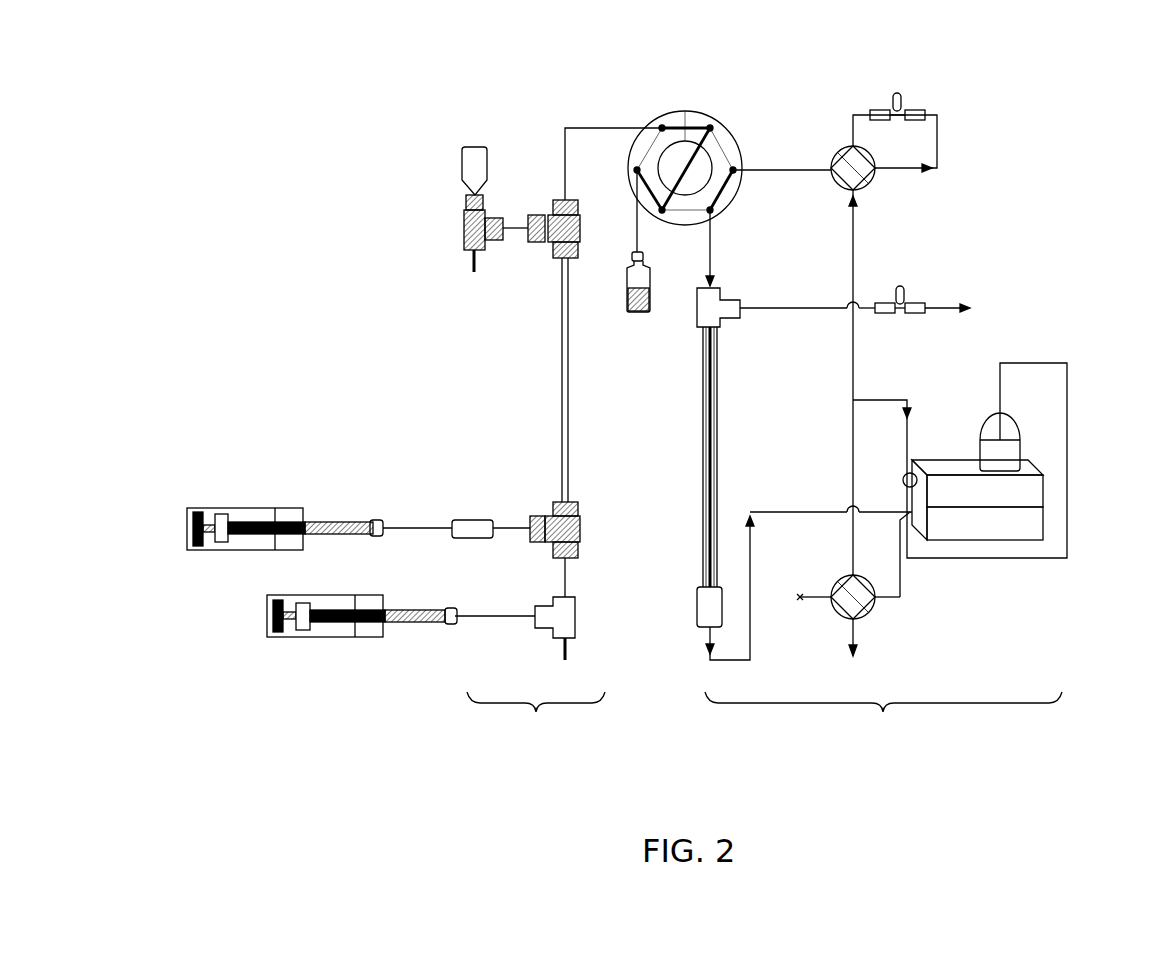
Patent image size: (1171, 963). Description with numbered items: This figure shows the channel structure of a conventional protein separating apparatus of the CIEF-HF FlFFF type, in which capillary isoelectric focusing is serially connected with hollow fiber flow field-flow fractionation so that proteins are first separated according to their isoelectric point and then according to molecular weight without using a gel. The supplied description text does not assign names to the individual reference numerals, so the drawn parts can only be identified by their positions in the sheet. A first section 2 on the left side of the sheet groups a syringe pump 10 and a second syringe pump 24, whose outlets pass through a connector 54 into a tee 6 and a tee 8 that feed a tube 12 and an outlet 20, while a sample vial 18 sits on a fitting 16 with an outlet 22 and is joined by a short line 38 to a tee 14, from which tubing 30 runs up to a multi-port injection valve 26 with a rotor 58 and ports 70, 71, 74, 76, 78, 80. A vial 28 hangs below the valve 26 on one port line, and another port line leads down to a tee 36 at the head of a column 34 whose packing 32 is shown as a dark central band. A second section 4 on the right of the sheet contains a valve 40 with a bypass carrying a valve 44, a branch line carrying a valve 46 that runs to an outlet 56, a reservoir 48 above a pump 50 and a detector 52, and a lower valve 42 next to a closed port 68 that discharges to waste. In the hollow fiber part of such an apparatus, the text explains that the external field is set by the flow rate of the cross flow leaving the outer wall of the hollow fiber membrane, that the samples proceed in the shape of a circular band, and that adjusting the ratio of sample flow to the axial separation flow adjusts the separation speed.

The sample preparation section 2 is at (536, 721).
The analysis section 4 is at (883, 721).
The tee fitting 6 is at (582, 530).
The tee fitting 8 is at (577, 620).
The syringe pump 10 is at (243, 508).
The tube 12 is at (570, 400).
The tee fitting 14 is at (584, 250).
The fitting 16 is at (464, 228).
The sample vial 18 is at (462, 154).
The outlet 20 is at (570, 648).
The outlet 22 is at (470, 258).
The syringe pump 24 is at (323, 637).
The injection valve 26 is at (740, 140).
The vial 28 is at (640, 315).
The tubing 30 is at (600, 124).
The column packing 32 is at (721, 416).
The column 34 is at (721, 347).
The tee fitting 36 is at (721, 290).
The tubing 38 is at (513, 232).
The valve 40 is at (840, 186).
The valve 42 is at (835, 580).
The valve 44 is at (905, 100).
The valve 46 is at (906, 292).
The reservoir 48 is at (1025, 441).
The pump 50 is at (1045, 490).
The detector 52 is at (1045, 523).
The connector 54 is at (471, 520).
The outlet 56 is at (982, 306).
The valve rotor 58 is at (676, 115).
The closed port 68 is at (798, 596).
The valve port 70 is at (660, 124).
The valve port 71 is at (632, 170).
The valve port 74 is at (663, 216).
The valve port 76 is at (714, 211).
The valve port 78 is at (746, 168).
The valve port 80 is at (708, 124).